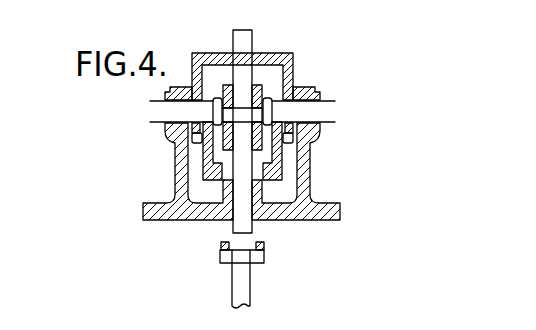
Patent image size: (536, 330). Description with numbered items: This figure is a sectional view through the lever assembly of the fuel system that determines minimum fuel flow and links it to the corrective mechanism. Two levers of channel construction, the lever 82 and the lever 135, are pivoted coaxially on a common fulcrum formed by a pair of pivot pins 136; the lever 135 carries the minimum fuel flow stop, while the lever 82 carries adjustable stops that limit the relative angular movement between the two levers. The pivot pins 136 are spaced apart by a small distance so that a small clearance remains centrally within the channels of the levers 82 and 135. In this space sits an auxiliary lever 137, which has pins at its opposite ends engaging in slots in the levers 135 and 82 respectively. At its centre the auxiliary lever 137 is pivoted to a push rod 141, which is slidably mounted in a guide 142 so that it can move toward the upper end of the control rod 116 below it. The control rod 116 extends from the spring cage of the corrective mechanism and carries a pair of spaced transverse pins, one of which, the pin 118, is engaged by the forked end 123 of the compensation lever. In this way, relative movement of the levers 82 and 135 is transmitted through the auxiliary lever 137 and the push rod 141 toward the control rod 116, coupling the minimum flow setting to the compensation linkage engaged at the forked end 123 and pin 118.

The lever 82 is at (215, 57).
The push rod 141 is at (252, 32).
The auxiliary lever 137 is at (262, 87).
The pivot pins 136 is at (188, 113).
The lever 135 is at (218, 162).
The guide 142 is at (213, 213).
The forked end 123 is at (262, 246).
The transverse pin 118 is at (264, 262).
The control rod 116 is at (238, 288).